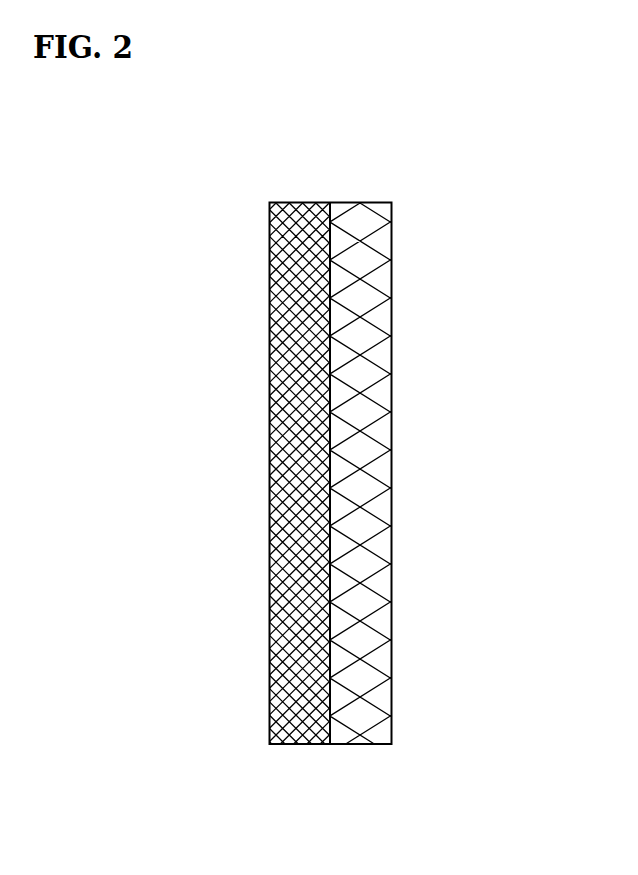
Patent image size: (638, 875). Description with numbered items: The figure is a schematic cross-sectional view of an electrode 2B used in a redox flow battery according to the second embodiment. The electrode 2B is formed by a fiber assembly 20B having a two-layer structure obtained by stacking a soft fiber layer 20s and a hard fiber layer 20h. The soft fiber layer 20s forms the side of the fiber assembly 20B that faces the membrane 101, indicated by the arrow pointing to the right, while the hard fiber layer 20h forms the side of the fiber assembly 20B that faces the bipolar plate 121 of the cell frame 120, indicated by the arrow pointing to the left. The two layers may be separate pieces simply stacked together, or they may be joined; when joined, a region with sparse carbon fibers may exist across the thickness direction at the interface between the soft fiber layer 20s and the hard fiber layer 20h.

The electrode 2B is at (232, 209).
The fiber assembly 20B is at (267, 495).
The hard fiber layer 20h is at (298, 736).
The soft fiber layer 20s is at (357, 737).
The bipolar plate 121 is at (143, 471).
The cell frame 120 is at (233, 471).
The membrane 101 is at (447, 471).